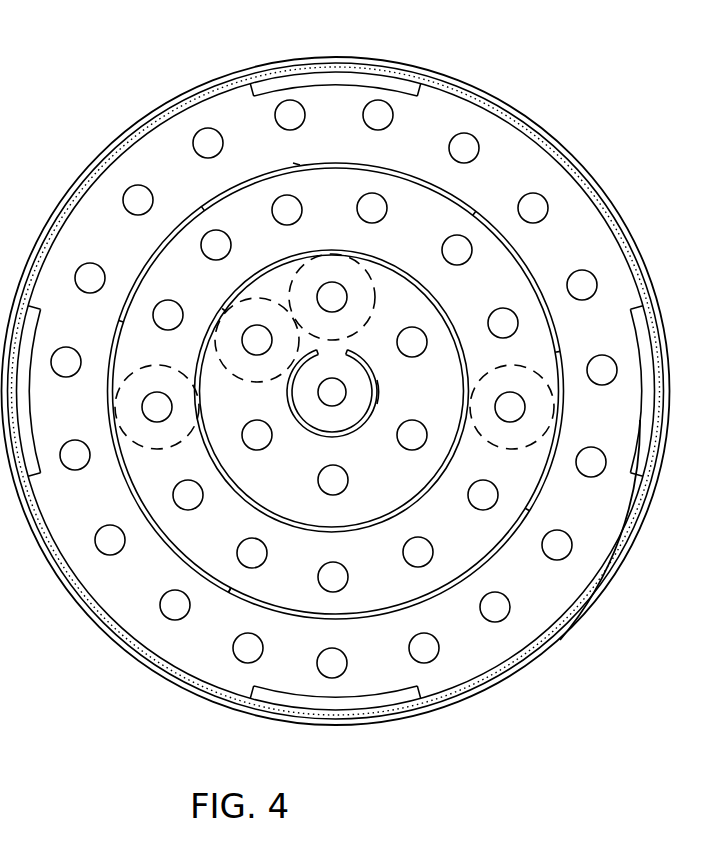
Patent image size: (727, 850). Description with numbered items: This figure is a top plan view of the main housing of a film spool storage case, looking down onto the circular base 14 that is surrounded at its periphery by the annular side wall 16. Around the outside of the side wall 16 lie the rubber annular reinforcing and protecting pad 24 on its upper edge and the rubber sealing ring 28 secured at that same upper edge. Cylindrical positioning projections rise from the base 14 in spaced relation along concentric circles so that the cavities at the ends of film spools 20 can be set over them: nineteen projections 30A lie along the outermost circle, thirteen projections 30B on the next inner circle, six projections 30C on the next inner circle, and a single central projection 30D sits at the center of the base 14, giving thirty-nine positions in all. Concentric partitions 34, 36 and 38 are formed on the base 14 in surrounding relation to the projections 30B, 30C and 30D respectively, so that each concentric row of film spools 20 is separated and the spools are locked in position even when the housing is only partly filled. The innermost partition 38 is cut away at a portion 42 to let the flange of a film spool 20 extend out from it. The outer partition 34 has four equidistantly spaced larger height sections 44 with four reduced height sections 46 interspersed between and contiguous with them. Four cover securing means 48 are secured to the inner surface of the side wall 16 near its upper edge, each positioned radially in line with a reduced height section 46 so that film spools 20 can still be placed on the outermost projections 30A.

The circular base 14 is at (93, 200).
The annular side wall 16 is at (600, 590).
The film spools 20 is at (267, 296).
The annular reinforcing and protecting pad 24 is at (635, 527).
The rubber sealing ring 28 is at (560, 627).
The projections of outermost concentric circle 30A is at (495, 607).
The projections of next inner concentric circle 30B is at (320, 583).
The projections of inner concentric circle 30C is at (318, 471).
The central projection 30D is at (332, 392).
The concentric partition 34 is at (228, 594).
The concentric partition 36 is at (348, 533).
The concentric partition 38 is at (392, 395).
The cut away portion 42 is at (363, 339).
The larger height sections 44 is at (147, 258).
The reduced height sections 46 is at (293, 163).
The cover securing means 48 is at (333, 77).